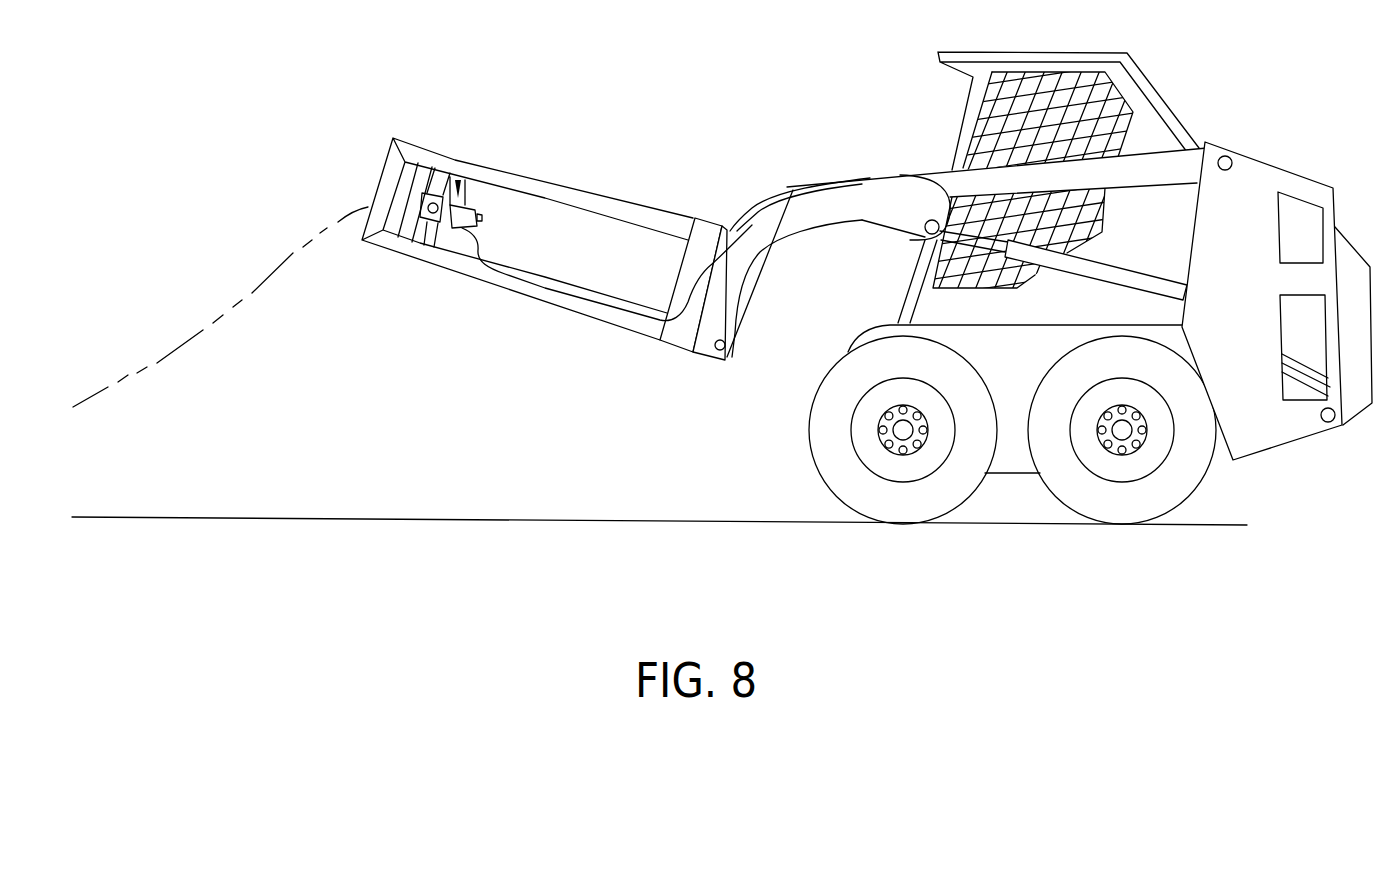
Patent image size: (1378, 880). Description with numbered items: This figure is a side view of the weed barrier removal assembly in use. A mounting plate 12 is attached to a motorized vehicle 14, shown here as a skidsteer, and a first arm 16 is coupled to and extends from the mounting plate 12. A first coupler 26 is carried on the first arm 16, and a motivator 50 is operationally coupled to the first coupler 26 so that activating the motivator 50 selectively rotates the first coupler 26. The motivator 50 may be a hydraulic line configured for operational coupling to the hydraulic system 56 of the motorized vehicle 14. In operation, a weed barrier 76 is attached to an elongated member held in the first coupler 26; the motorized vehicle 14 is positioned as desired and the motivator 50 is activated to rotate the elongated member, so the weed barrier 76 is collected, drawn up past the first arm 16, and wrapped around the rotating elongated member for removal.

The mounting plate 12 is at (714, 307).
The motorized vehicle 14 is at (873, 185).
The first arm 16 is at (568, 186).
The first coupler 26 is at (443, 172).
The motivator 50 is at (452, 175).
The hydraulic system 56 is at (748, 230).
The weed barrier 76 is at (270, 274).